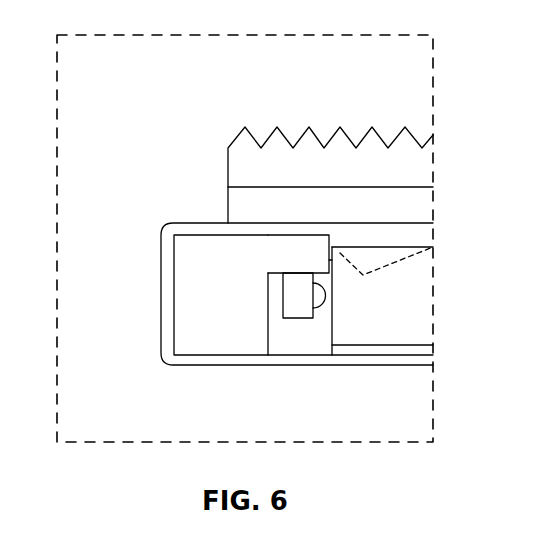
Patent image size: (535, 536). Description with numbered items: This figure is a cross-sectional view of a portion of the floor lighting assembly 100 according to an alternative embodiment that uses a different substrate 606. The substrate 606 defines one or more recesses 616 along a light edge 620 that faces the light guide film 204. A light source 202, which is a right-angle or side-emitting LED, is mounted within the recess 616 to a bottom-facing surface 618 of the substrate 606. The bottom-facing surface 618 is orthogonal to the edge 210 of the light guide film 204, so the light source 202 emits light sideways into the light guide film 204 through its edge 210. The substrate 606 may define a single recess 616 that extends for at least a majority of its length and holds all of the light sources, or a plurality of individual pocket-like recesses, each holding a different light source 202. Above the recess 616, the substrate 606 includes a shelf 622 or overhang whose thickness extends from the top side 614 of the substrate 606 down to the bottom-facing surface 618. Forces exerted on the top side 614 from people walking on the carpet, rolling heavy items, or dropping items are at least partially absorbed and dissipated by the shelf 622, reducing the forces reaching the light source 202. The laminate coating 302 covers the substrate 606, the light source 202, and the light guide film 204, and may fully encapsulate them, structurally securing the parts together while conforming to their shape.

The floor lighting assembly 100 is at (228, 93).
The laminate coating 302 is at (183, 233).
The substrate 606 is at (197, 307).
The top side 614 is at (205, 240).
The shelf 622 is at (295, 252).
The edge 210 is at (333, 333).
The light source 202 is at (297, 307).
The bottom-facing surface 618 is at (328, 280).
The light guide film 204 is at (398, 313).
The light edge 620 is at (338, 258).
The recess 616 is at (266, 292).